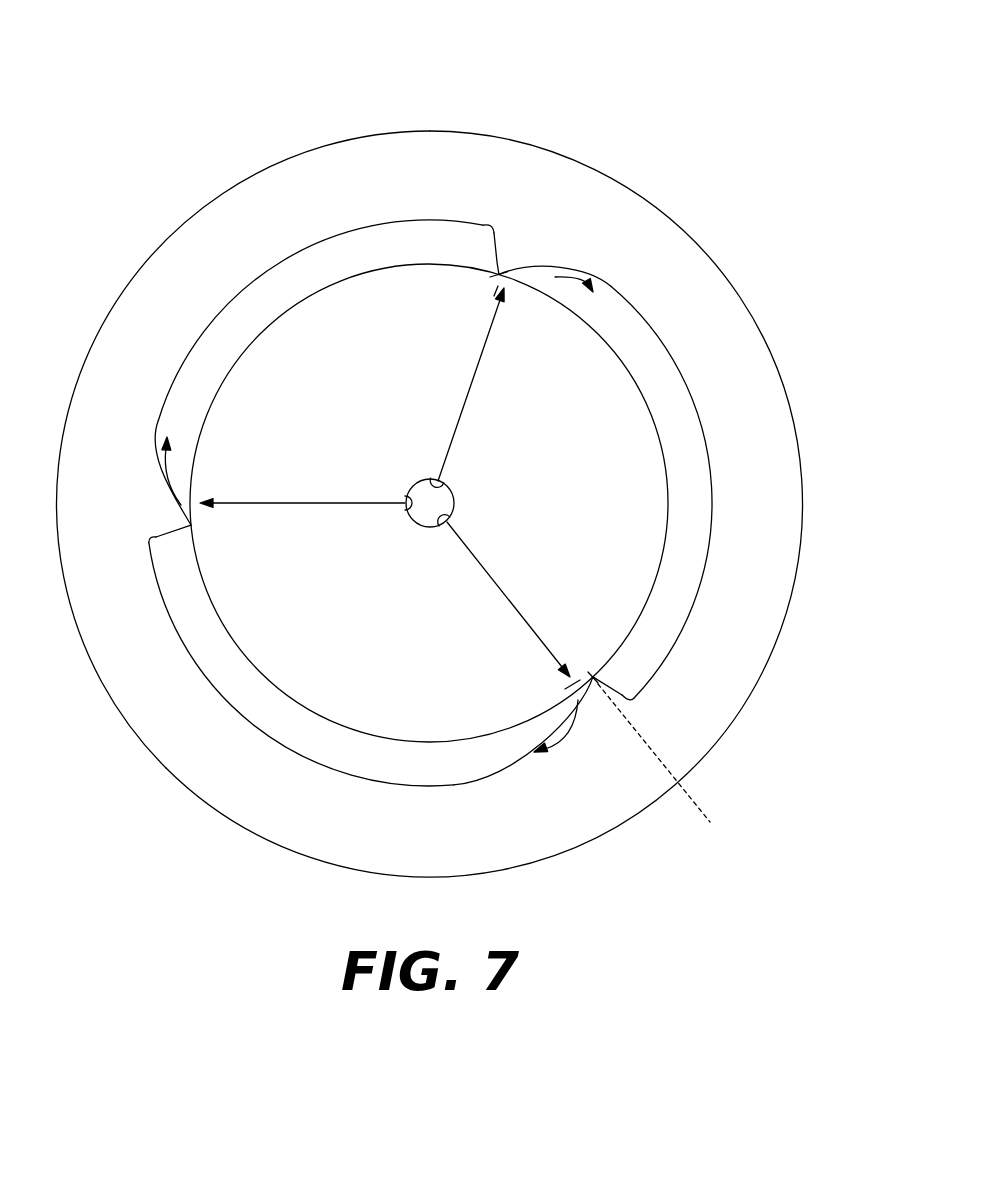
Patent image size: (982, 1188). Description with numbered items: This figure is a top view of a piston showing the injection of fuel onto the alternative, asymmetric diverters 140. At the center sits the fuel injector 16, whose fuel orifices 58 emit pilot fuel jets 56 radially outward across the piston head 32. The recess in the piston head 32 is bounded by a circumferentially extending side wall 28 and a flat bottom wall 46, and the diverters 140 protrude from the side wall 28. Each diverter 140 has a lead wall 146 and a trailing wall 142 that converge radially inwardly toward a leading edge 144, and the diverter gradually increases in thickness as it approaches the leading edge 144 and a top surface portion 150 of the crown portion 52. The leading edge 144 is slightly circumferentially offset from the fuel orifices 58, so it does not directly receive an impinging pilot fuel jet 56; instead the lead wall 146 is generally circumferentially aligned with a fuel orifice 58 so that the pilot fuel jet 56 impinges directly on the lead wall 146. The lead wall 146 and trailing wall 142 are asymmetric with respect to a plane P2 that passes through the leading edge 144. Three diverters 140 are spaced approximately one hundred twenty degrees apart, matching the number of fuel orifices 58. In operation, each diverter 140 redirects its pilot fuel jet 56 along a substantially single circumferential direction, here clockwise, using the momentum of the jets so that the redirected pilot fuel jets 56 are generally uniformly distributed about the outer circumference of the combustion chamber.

The fuel injector 16 is at (420, 526).
The side wall 28 is at (692, 402).
The piston head 32 is at (177, 757).
The bottom wall 46 is at (687, 487).
The crown portion 52 is at (430, 150).
The pilot fuel jet 56 is at (557, 279).
The fuel orifice 58 is at (437, 480).
The diverter 140 is at (494, 296).
The trailing wall 142 is at (488, 230).
The leading edge 144 is at (491, 279).
The lead wall 146 is at (536, 258).
The top surface portion 150 is at (504, 264).
The plane P2 is at (694, 800).